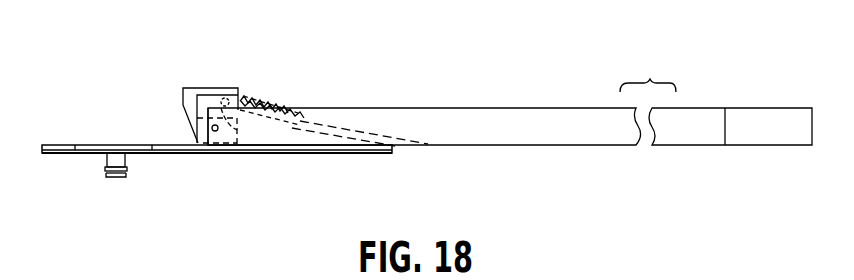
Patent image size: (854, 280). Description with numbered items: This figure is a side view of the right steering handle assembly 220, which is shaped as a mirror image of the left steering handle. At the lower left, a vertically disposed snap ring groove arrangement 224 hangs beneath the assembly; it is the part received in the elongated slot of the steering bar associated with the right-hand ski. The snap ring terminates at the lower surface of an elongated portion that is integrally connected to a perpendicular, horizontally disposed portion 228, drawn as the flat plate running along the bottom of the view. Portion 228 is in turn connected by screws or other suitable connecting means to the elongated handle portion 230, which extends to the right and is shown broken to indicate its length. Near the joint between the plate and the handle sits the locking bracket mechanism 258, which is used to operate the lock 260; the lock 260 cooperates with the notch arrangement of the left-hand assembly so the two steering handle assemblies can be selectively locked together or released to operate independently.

The right steering handle assembly 220 is at (466, 64).
The snap ring groove arrangement 224 is at (123, 176).
The horizontally disposed portion 228 is at (167, 145).
The elongated handle portion 230 is at (583, 108).
The locking bracket mechanism 258 is at (247, 86).
The lock 260 is at (205, 90).